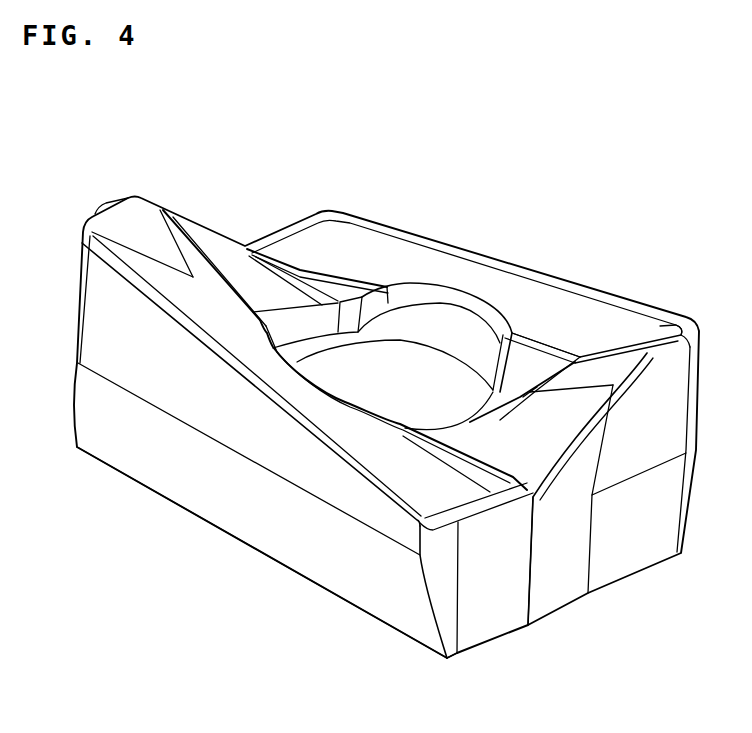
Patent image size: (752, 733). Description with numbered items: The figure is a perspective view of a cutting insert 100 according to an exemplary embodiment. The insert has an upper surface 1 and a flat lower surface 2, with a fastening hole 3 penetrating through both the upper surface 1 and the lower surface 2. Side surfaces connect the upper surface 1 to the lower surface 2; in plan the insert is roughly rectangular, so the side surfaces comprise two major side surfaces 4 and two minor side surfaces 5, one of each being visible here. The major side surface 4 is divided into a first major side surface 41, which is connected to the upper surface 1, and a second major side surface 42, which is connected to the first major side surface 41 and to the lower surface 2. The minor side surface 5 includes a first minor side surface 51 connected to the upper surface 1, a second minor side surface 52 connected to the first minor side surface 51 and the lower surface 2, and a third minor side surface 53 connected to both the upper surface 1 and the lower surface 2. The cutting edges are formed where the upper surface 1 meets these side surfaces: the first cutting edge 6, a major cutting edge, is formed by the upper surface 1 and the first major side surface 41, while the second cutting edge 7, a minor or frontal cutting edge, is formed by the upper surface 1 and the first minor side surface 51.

The cutting insert 100 is at (468, 184).
The upper surface 1 is at (364, 249).
The lower surface 2 is at (306, 606).
The fastening hole 3 is at (462, 335).
The major side surface 4 is at (159, 456).
The first major side surface 41 is at (106, 306).
The second major side surface 42 is at (225, 508).
The minor side surface 5 is at (558, 578).
The first minor side surface 51 is at (673, 410).
The second minor side surface 52 is at (663, 517).
The third minor side surface 53 is at (494, 618).
The first cutting edge 6 is at (150, 290).
The second cutting edge 7 is at (108, 214).